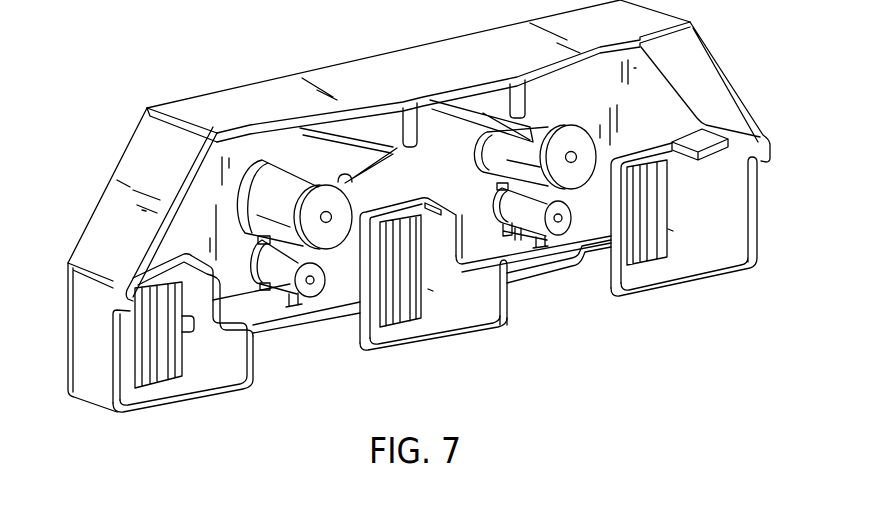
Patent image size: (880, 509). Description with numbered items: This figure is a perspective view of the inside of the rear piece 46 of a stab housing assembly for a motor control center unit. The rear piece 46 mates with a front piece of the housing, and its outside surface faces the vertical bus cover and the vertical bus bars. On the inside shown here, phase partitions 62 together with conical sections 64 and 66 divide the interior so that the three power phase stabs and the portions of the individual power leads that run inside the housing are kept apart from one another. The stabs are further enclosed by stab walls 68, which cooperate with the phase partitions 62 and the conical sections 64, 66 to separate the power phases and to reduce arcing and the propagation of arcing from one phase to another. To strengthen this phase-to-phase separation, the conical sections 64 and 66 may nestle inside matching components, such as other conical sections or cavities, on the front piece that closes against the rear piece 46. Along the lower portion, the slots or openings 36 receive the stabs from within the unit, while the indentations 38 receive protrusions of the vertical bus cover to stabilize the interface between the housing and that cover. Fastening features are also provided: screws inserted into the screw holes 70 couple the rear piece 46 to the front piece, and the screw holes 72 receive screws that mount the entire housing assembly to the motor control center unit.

The rear piece 46 is at (415, 232).
The conical section 66 is at (260, 183).
The conical section 64 is at (268, 260).
The phase partition 62 is at (395, 118).
The screw hole 72 is at (330, 217).
The screw hole 70 is at (322, 282).
The stab wall 68 is at (700, 145).
The indentation 38 is at (157, 363).
The opening 36 is at (178, 347).